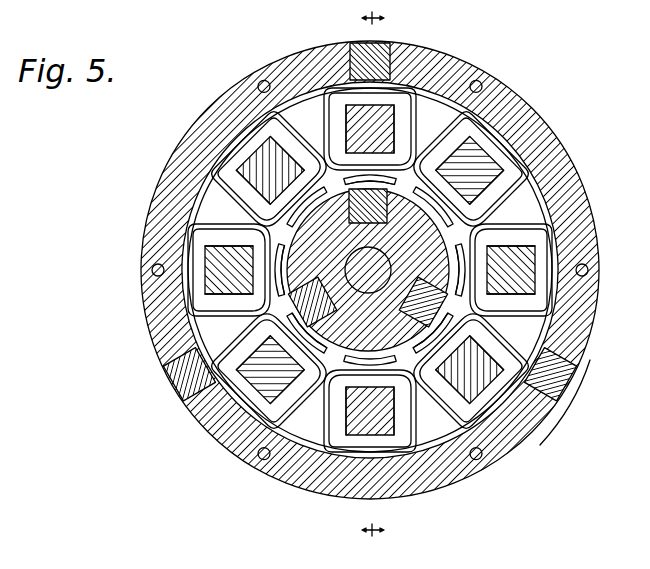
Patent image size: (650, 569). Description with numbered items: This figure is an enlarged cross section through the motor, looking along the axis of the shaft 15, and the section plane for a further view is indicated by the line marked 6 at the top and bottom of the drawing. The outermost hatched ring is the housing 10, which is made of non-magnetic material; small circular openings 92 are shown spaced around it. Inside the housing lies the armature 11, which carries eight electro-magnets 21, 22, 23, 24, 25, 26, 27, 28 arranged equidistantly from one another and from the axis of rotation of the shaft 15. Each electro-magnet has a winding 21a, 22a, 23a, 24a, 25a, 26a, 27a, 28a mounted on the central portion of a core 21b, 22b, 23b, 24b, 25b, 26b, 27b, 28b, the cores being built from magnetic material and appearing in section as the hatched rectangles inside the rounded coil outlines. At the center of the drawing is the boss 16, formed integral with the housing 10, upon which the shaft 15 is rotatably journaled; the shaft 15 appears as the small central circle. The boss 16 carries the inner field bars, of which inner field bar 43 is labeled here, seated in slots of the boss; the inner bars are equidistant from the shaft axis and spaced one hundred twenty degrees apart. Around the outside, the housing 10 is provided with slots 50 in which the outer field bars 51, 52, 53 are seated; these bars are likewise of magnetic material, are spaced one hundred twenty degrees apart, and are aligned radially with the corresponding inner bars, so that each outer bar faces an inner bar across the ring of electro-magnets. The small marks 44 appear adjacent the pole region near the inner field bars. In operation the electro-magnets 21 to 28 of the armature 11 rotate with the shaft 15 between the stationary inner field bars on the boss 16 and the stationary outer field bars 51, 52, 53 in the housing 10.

The section line 6 is at (364, 282).
The housing 10 is at (556, 197).
The armature 11 is at (516, 200).
The shaft 15 is at (346, 344).
The boss 16 is at (394, 344).
The electro-magnet 21 is at (400, 113).
The winding 21a is at (396, 103).
The core 21b is at (346, 106).
The electro-magnet 22 is at (250, 162).
The winding 22a is at (268, 117).
The core 22b is at (260, 148).
The electro-magnet 23 is at (210, 261).
The winding 23a is at (196, 241).
The core 23b is at (218, 277).
The electro-magnet 24 is at (237, 406).
The winding 24a is at (226, 392).
The core 24b is at (265, 401).
The electro-magnet 25 is at (387, 443).
The winding 25a is at (343, 452).
The core 25b is at (370, 415).
The electro-magnet 26 is at (486, 381).
The winding 26a is at (478, 425).
The core 26b is at (488, 366).
The electro-magnet 27 is at (528, 264).
The winding 27a is at (556, 230).
The core 27b is at (530, 283).
The electro-magnet 28 is at (472, 150).
The winding 28a is at (484, 168).
The core 28b is at (513, 200).
The inner field bar 43 is at (369, 278).
The pole shoe 44 is at (348, 180).
The slots 50 is at (580, 362).
The outer field bar 51 is at (373, 58).
The outer field bar 52 is at (188, 368).
The outer field bar 53 is at (560, 372).
The bolt hole 92 is at (472, 86).